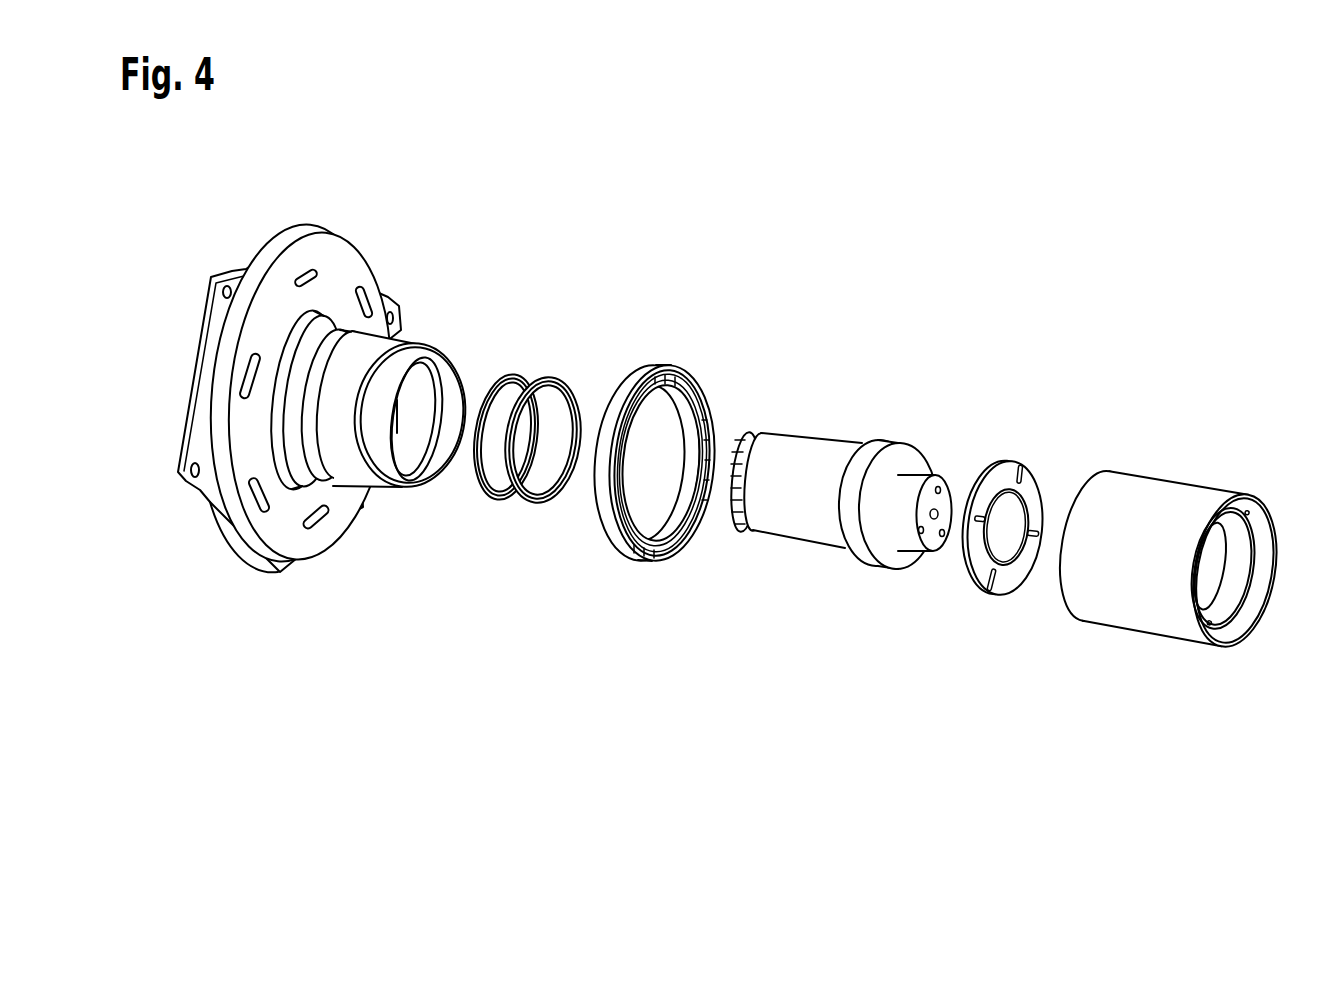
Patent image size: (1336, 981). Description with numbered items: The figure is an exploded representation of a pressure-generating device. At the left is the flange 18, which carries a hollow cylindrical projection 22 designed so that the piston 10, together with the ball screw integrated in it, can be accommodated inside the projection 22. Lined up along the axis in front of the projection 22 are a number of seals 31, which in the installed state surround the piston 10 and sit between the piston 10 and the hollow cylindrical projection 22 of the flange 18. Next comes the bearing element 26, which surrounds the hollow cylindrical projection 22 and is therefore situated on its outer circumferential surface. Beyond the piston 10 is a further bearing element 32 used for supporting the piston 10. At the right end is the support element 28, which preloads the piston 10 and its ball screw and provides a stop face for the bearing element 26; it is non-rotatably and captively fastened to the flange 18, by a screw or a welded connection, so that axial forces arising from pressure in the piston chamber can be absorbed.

The flange 18 is at (308, 356).
The hollow cylindrical projection 22 is at (390, 470).
The seals 31 is at (549, 384).
The bearing element 26 is at (630, 385).
The piston 10 is at (812, 467).
The further bearing element 32 is at (997, 488).
The support element 28 is at (1178, 493).